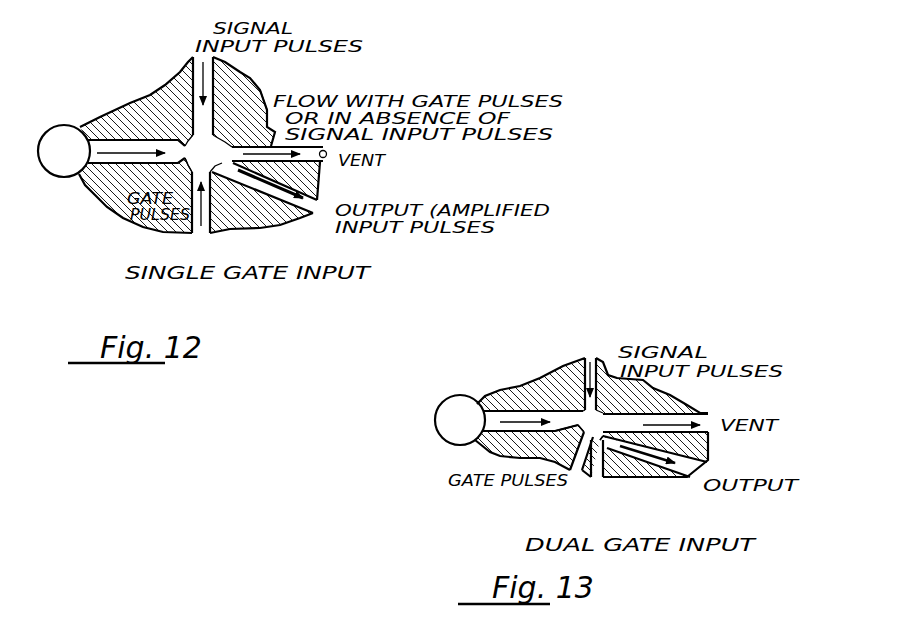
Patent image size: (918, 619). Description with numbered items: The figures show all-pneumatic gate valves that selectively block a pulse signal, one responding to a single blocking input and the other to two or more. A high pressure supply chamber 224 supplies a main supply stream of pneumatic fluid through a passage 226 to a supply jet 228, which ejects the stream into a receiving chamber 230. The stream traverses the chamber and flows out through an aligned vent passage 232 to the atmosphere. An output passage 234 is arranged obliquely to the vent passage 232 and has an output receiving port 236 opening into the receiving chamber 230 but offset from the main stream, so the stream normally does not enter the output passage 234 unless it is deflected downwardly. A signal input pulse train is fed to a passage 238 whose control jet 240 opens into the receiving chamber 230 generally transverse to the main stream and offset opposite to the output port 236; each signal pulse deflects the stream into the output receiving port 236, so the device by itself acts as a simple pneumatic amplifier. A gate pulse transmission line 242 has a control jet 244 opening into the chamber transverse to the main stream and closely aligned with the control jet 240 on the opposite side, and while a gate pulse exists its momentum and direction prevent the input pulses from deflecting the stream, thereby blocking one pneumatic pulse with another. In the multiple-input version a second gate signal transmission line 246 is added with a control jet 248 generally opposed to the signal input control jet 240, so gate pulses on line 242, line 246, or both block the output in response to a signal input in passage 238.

In FIG. 12, the high pressure supply chamber 224 is at (46, 130).
In FIG. 13, the high pressure supply chamber 224 is at (453, 394).
In FIG. 12, the passage 226 is at (120, 162).
In FIG. 13, the passage 226 is at (513, 430).
In FIG. 12, the supply jet 228 is at (134, 96).
In FIG. 13, the supply jet 228 is at (591, 417).
In FIG. 12, the receiving chamber 230 is at (208, 153).
In FIG. 13, the receiving chamber 230 is at (608, 425).
In FIG. 12, the vent passage 232 is at (323, 158).
In FIG. 13, the vent passage 232 is at (704, 413).
In FIG. 12, the output passage 234 is at (310, 216).
In FIG. 13, the output passage 234 is at (690, 477).
In FIG. 12, the output receiving port 236 is at (220, 172).
In FIG. 13, the output receiving port 236 is at (620, 473).
In FIG. 12, the passage 238 is at (210, 82).
In FIG. 13, the passage 238 is at (592, 357).
In FIG. 12, the control jet 240 is at (204, 128).
In FIG. 13, the control jet 240 is at (601, 409).
In FIG. 12, the gate pulse transmission line 242 is at (218, 233).
In FIG. 13, the gate pulse transmission line 242 is at (599, 478).
In FIG. 12, the control jet 244 is at (187, 173).
In FIG. 13, the control jet 244 is at (609, 450).
In FIG. 13, the second gate signal transmission line 246 is at (580, 471).
In FIG. 13, the control jet 248 is at (555, 443).